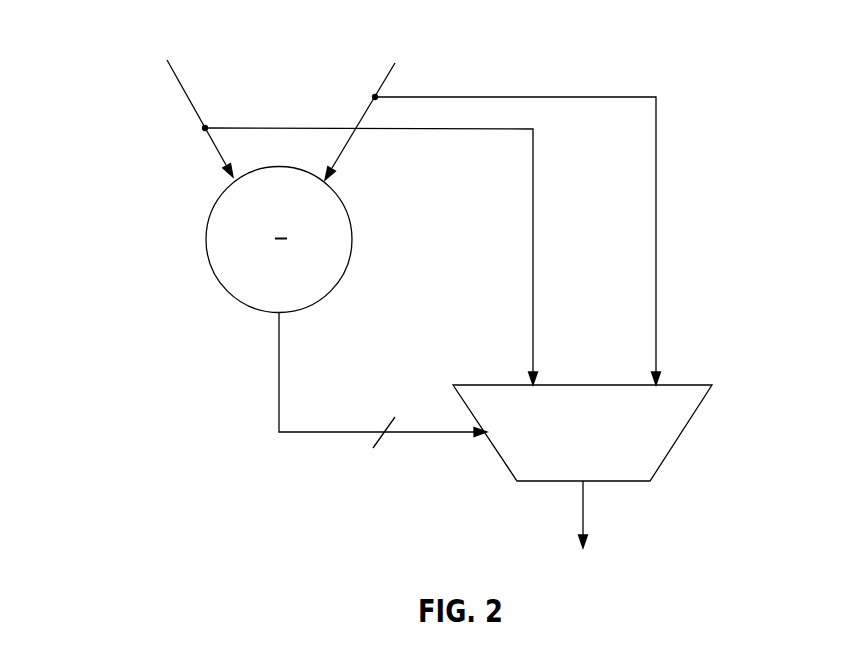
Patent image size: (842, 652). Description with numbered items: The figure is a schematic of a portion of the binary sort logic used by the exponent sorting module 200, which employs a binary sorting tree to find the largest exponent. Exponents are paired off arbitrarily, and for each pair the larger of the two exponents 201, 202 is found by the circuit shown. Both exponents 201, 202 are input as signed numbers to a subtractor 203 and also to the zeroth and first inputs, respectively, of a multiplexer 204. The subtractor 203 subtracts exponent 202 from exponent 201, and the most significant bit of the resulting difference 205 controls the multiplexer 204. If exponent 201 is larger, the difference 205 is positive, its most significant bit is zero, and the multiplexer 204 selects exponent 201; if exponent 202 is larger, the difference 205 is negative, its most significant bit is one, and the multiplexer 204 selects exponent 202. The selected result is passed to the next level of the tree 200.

The exponent sorting module 200 is at (130, 53).
The exponent 201 is at (178, 78).
The exponent 202 is at (375, 93).
The subtractor 203 is at (206, 238).
The multiplexer 204 is at (677, 385).
The difference 205 is at (279, 373).